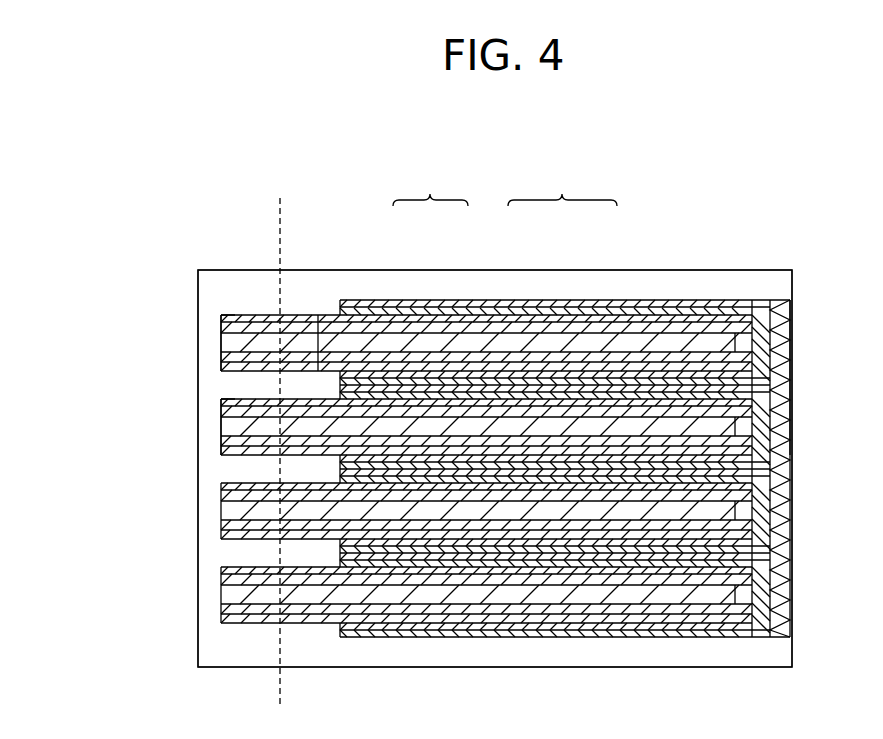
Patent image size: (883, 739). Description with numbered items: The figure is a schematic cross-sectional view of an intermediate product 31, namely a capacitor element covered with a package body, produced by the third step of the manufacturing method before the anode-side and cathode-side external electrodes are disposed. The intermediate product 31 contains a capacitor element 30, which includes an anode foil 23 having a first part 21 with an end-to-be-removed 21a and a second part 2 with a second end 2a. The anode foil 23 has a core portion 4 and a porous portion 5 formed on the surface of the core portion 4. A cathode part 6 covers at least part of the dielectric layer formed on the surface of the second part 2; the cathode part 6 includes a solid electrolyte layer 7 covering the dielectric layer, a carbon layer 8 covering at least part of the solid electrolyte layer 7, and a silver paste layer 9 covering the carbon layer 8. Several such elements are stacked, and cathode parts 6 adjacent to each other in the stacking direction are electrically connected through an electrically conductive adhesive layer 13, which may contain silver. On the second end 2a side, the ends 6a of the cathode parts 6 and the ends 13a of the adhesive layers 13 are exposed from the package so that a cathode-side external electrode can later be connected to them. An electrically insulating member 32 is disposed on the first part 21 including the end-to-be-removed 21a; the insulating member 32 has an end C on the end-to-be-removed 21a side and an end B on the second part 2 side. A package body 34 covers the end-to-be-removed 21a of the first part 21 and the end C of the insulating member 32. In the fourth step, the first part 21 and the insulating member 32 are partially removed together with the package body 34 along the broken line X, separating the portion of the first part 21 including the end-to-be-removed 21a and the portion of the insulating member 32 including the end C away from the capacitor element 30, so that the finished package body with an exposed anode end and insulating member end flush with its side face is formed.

The second part 2 is at (336, 330).
The second end 2a is at (793, 318).
The core portion 4 is at (413, 340).
The porous portion 5 is at (445, 323).
The cathode part 6 is at (555, 401).
The end of cathode part 6a is at (793, 360).
The solid electrolyte layer 7 is at (510, 304).
The carbon layer 8 is at (555, 306).
The silver paste layer 9 is at (594, 306).
The adhesive layer 13 is at (665, 352).
The end of adhesive layer 13a is at (793, 378).
The first part 21 is at (287, 337).
The end-to-be-removed 21a is at (230, 347).
The anode foil 23 is at (430, 186).
The capacitor element 30 is at (733, 296).
The intermediate product 31 is at (775, 158).
The insulating member 32 is at (258, 313).
The package body 34 is at (700, 272).
The end of insulating member on second part side B is at (318, 338).
The end of insulating member on end-to-be-removed side C is at (230, 320).
The broken line X is at (280, 439).